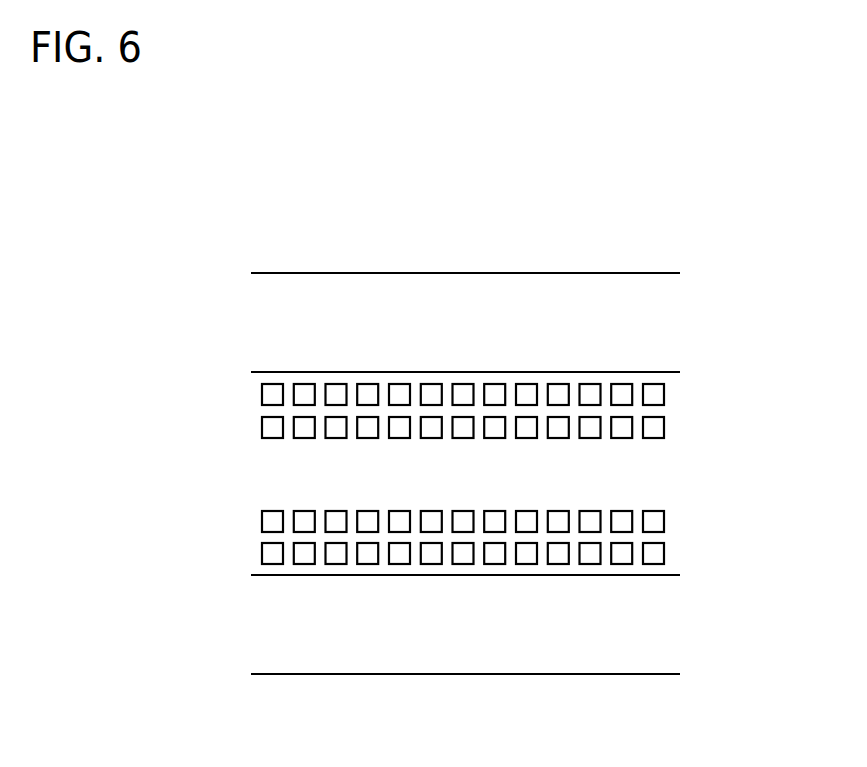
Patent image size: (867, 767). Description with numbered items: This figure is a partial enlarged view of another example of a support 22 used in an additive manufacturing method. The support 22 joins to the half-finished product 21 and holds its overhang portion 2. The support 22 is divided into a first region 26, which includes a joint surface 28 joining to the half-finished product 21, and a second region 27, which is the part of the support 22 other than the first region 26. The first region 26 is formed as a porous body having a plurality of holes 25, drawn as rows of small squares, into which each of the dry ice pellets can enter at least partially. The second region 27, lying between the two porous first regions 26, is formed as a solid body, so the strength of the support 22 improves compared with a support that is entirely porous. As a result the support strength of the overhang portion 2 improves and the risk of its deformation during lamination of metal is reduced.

The half-finished product 21 is at (423, 246).
The overhang portion 2 is at (534, 300).
The support 22 is at (760, 372).
The holes 25 is at (340, 396).
The first region 26 is at (692, 378).
The second region 27 is at (692, 443).
The joint surface 28 is at (597, 372).